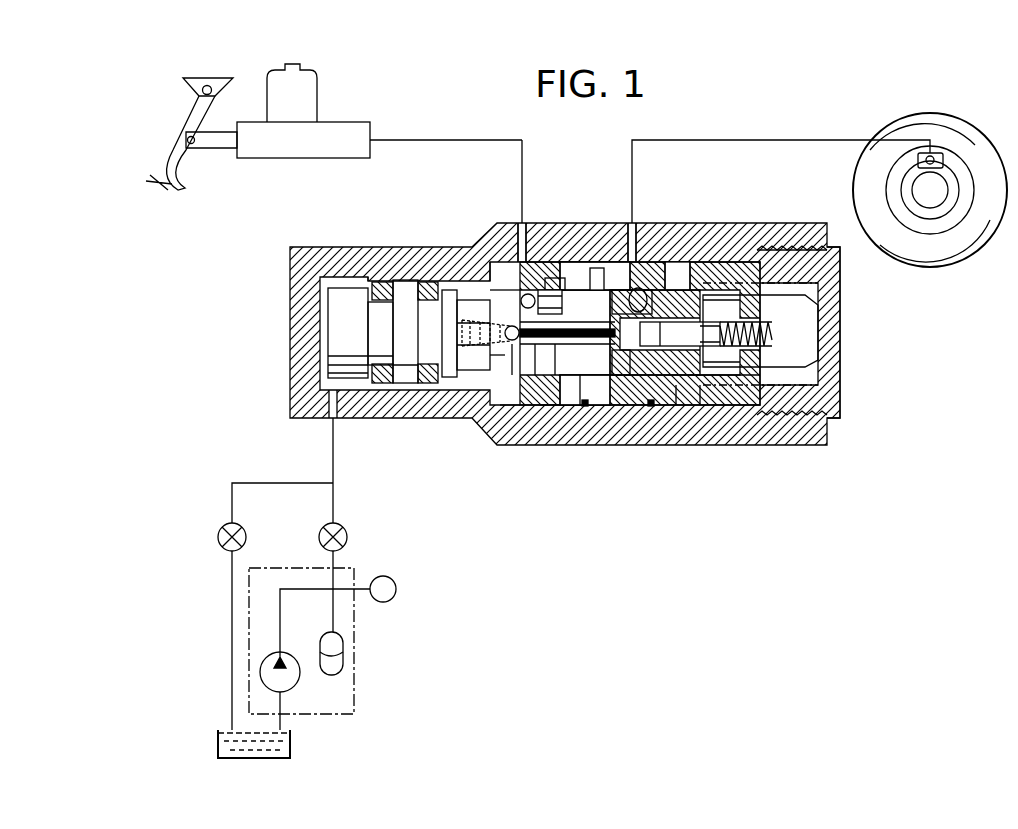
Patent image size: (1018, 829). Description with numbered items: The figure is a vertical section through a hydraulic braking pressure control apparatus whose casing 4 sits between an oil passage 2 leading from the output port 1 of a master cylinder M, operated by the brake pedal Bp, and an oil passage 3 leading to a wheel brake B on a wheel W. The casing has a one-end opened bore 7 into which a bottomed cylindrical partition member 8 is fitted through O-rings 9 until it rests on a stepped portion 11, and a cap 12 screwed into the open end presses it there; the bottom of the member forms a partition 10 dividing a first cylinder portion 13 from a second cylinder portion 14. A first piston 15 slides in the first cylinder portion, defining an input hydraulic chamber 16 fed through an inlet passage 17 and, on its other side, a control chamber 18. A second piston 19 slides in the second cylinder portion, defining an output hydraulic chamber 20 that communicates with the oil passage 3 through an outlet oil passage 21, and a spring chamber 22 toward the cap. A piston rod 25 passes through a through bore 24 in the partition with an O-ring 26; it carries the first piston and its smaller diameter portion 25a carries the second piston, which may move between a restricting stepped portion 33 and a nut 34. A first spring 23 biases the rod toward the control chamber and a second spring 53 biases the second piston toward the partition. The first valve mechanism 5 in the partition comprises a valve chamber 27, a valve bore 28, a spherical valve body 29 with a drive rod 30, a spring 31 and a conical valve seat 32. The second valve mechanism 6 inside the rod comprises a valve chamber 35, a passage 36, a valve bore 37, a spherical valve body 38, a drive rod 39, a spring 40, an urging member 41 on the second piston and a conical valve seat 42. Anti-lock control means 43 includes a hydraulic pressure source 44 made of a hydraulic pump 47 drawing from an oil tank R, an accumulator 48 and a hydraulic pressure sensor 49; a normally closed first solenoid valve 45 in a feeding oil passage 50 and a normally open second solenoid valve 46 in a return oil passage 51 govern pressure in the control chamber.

The brake pedal Bp is at (150, 177).
The master cylinder M is at (300, 160).
The output port 1 is at (372, 140).
The oil passage 2 is at (522, 163).
The oil passage 3 is at (767, 140).
The casing 4 is at (406, 247).
The first valve mechanism 5 is at (506, 281).
The second valve mechanism 6 is at (470, 330).
The one-end opened bore 7 is at (677, 405).
The bottomed cylindrical partition member 8 is at (700, 405).
The O-rings 9 is at (651, 406).
The partition 10 is at (552, 405).
The stepped portion 11 is at (516, 405).
The cap 12 is at (835, 397).
The first cylinder portion 13 is at (452, 380).
The second cylinder portion 14 is at (705, 266).
The first piston 15 is at (403, 383).
The input hydraulic chamber 16 is at (466, 281).
The inlet passage 17 is at (520, 226).
The control chamber 18 is at (347, 288).
The second piston 19 is at (677, 263).
The output hydraulic chamber 20 is at (663, 263).
The outlet oil passage 21 is at (630, 226).
The spring chamber 22 is at (805, 343).
The first spring 23 is at (806, 290).
The through bore 24 is at (535, 367).
The piston rod 25 is at (488, 318).
The smaller diameter portion 25a is at (690, 378).
The O-ring 26 is at (600, 400).
The valve chamber 27 is at (578, 262).
The valve bore 28 is at (600, 263).
The spherical valve body 29 is at (567, 264).
The drive rod 30 is at (632, 301).
The spring 31 is at (545, 280).
The conical valve seat 32 is at (567, 325).
The restricting stepped portion 33 is at (680, 336).
The nut 34 is at (745, 336).
The valve chamber 35 is at (460, 345).
The passage 36 is at (655, 332).
The valve bore 37 is at (585, 386).
The spherical valve body 38 is at (521, 301).
The drive rod 39 is at (560, 367).
The spring 40 is at (486, 364).
The urging member 41 is at (628, 368).
The conical valve seat 42 is at (506, 367).
The anti-lock control means 43 is at (413, 547).
The hydraulic pressure source 44 is at (354, 691).
The first solenoid valve 45 is at (347, 537).
The second solenoid valve 46 is at (246, 537).
The hydraulic pump 47 is at (288, 678).
The accumulator 48 is at (343, 652).
The hydraulic pressure sensor 49 is at (396, 589).
The feeding oil passage 50 is at (333, 455).
The return oil passage 51 is at (278, 483).
The second spring 53 is at (773, 292).
The wheel brake B is at (940, 152).
The wheel W is at (955, 262).
The oil tank R is at (290, 747).